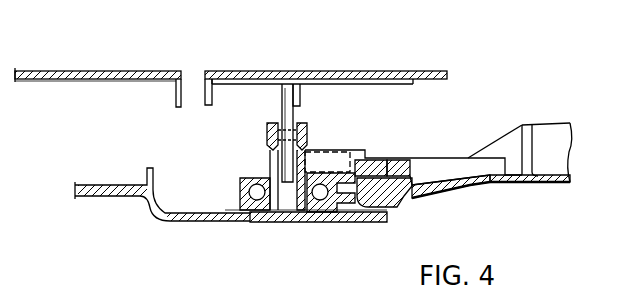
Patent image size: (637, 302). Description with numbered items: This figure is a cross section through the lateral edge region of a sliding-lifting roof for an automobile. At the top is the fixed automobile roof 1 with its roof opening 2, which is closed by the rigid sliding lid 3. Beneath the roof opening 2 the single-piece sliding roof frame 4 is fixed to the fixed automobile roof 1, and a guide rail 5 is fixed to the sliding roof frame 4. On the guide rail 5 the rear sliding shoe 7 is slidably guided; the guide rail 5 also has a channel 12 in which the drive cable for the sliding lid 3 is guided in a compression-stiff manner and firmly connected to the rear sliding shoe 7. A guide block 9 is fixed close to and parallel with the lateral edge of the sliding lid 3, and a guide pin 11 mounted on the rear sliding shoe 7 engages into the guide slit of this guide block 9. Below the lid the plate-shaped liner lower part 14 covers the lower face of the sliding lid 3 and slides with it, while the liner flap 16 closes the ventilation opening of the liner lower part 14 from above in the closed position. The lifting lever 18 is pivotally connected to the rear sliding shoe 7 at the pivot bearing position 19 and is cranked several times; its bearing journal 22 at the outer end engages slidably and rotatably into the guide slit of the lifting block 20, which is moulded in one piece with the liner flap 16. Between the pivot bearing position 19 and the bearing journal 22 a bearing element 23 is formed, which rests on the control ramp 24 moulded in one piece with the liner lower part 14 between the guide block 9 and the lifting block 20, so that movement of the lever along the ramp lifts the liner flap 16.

The fixed automobile roof 1 is at (110, 72).
The roof opening 2 is at (190, 88).
The sliding lid 3 is at (430, 72).
The sliding roof frame 4 is at (167, 223).
The guide rail 5 is at (240, 185).
The rear sliding shoe 7 is at (293, 212).
The guide block 9 is at (288, 112).
The guide pin 11 is at (268, 133).
The channel 12 is at (330, 213).
The liner lower part 14 is at (443, 192).
The liner flap 16 is at (553, 187).
The lifting lever 18 is at (371, 156).
The pivot bearing position 19 is at (330, 155).
The lifting block 20 is at (428, 163).
The bearing journal 22 is at (400, 163).
The bearing element 23 is at (378, 162).
The control ramp 24 is at (393, 207).